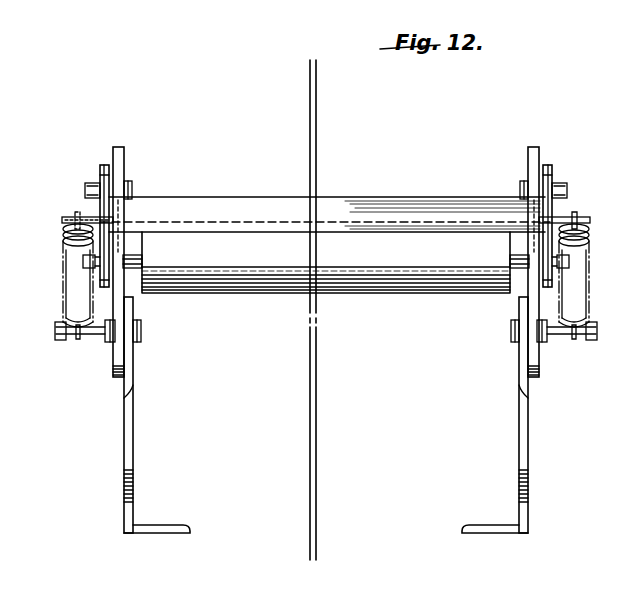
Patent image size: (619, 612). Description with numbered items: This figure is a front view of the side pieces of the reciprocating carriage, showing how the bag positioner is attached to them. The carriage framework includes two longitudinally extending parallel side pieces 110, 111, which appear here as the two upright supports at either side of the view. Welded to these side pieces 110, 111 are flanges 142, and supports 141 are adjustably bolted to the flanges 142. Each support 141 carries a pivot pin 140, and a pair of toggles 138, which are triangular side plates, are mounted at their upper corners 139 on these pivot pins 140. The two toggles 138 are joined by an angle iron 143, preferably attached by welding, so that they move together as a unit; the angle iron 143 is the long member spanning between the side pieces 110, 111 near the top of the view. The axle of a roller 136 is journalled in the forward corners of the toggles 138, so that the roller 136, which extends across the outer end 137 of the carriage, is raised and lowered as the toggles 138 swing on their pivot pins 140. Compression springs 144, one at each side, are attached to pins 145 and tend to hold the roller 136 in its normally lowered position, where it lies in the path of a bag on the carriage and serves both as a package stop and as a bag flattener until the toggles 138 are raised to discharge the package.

The side piece 110 is at (522, 443).
The side piece 111 is at (133, 437).
The roller 136 is at (408, 283).
The outer end 137 is at (518, 270).
The toggle 138 is at (100, 168).
The upper corner 139 is at (556, 178).
The pivot pin 140 is at (134, 186).
The support 141 is at (530, 148).
The flange 142 is at (128, 353).
The angle iron 143 is at (270, 185).
The compression spring 144 is at (70, 290).
The pin 145 is at (66, 214).